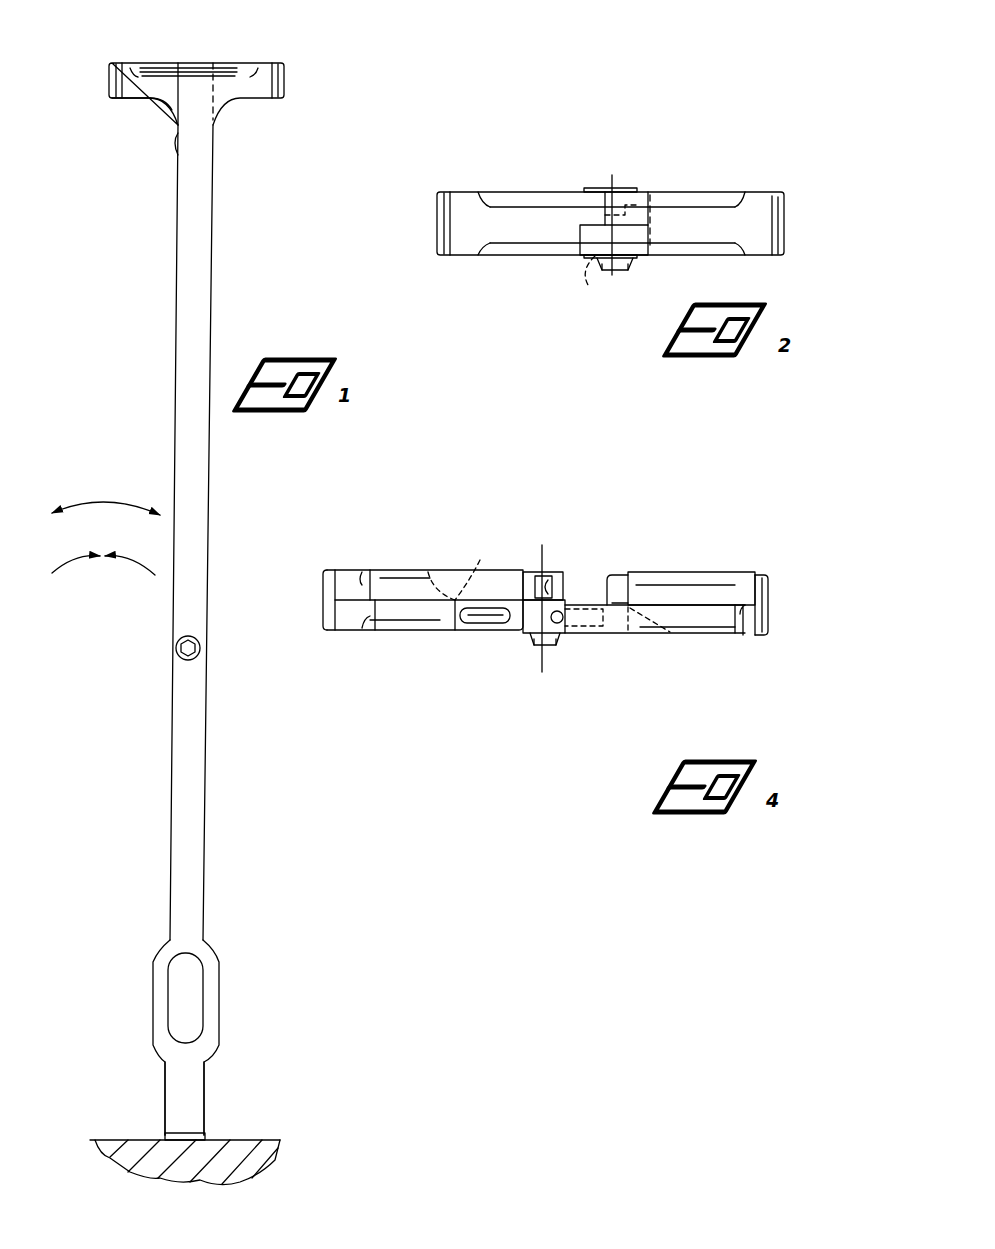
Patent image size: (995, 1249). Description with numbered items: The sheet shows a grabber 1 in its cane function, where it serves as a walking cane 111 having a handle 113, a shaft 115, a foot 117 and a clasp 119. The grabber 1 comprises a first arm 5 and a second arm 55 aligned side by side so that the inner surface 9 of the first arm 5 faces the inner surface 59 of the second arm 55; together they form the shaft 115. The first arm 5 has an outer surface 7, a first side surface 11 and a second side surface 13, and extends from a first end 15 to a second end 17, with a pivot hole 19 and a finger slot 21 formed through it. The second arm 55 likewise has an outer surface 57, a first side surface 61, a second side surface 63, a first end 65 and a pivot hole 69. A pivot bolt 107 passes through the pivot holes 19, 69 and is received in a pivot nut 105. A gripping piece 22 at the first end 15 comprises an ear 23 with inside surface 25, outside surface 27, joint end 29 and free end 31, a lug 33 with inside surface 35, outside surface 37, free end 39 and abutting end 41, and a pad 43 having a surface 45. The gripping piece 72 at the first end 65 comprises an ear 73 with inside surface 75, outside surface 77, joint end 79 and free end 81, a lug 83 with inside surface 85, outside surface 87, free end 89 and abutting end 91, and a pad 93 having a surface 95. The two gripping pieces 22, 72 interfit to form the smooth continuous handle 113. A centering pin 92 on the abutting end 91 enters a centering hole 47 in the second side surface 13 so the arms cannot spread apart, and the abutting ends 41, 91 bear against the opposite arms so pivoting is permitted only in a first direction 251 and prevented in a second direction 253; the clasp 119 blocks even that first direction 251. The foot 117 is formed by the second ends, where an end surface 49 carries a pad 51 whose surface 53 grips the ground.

In FIG. 1, the grabber 1 is at (134, 302).
In FIG. 2, the grabber 1 is at (766, 152).
In FIG. 4, the grabber 1 is at (778, 507).
In FIG. 1, the first arm 5 is at (214, 262).
In FIG. 2, the first arm 5 is at (583, 258).
In FIG. 4, the first arm 5 is at (605, 634).
In FIG. 1, the outer surface 7 is at (200, 205).
In FIG. 4, the outer surface 7 is at (618, 634).
In FIG. 4, the inner surface 9 is at (604, 590).
In FIG. 4, the first side surface 11 is at (672, 630).
In FIG. 4, the second side surface 13 is at (553, 646).
In FIG. 1, the first end 15 is at (207, 62).
In FIG. 1, the second end 17 is at (178, 1133).
In FIG. 2, the pivot hole 19 is at (652, 205).
In FIG. 4, the pivot hole 19 is at (525, 640).
In FIG. 1, the slot 21 is at (170, 980).
In FIG. 2, the gripping piece 22 is at (700, 192).
In FIG. 4, the gripping piece 22 is at (757, 641).
In FIG. 1, the ear 23 is at (270, 68).
In FIG. 2, the ear 23 is at (740, 255).
In FIG. 4, the ear 23 is at (712, 634).
In FIG. 4, the inside surface 25 is at (698, 600).
In FIG. 4, the outside surface 27 is at (742, 636).
In FIG. 4, the joint end 29 is at (640, 624).
In FIG. 4, the free end 31 is at (768, 615).
In FIG. 2, the lug 33 is at (720, 200).
In FIG. 4, the lug 33 is at (724, 572).
In FIG. 4, the inside surface 35 is at (765, 636).
In FIG. 4, the outside surface 37 is at (750, 576).
In FIG. 4, the free end 39 is at (770, 592).
In FIG. 4, the abutting end 41 is at (626, 577).
In FIG. 1, the pad 43 is at (276, 100).
In FIG. 2, the pad 43 is at (781, 216).
In FIG. 4, the pad 43 is at (770, 578).
In FIG. 1, the surface 45 is at (285, 76).
In FIG. 2, the surface 45 is at (786, 236).
In FIG. 4, the surface 45 is at (770, 634).
In FIG. 4, the centering hole 47 is at (562, 620).
In FIG. 1, the end surface 49 is at (200, 1133).
In FIG. 1, the pad 51 is at (206, 1138).
In FIG. 1, the surface 53 is at (190, 1142).
In FIG. 2, the second arm 55 is at (573, 190).
In FIG. 4, the second arm 55 is at (498, 570).
In FIG. 4, the outer surface 57 is at (526, 572).
In FIG. 4, the inner surface 59 is at (523, 622).
In FIG. 4, the first side surface 61 is at (441, 552).
In FIG. 4, the second side surface 63 is at (540, 578).
In FIG. 1, the first end 65 is at (160, 63).
In FIG. 2, the pivot hole 69 is at (602, 280).
In FIG. 4, the pivot hole 69 is at (546, 575).
In FIG. 1, the gripping piece 72 is at (155, 104).
In FIG. 2, the gripping piece 72 is at (532, 258).
In FIG. 4, the gripping piece 72 is at (340, 632).
In FIG. 2, the ear 73 is at (522, 190).
In FIG. 4, the ear 73 is at (386, 590).
In FIG. 4, the inside surface 75 is at (372, 628).
In FIG. 4, the outside surface 77 is at (412, 570).
In FIG. 4, the joint end 79 is at (470, 563).
In FIG. 4, the free end 81 is at (325, 586).
In FIG. 1, the lug 83 is at (135, 100).
In FIG. 2, the lug 83 is at (490, 256).
In FIG. 4, the lug 83 is at (395, 632).
In FIG. 4, the inside surface 85 is at (368, 585).
In FIG. 4, the outside surface 87 is at (410, 632).
In FIG. 4, the free end 89 is at (325, 611).
In FIG. 4, the abutting end 91 is at (472, 625).
In FIG. 4, the centering pin 92 is at (486, 620).
In FIG. 1, the pad 93 is at (112, 100).
In FIG. 2, the pad 93 is at (447, 190).
In FIG. 4, the pad 93 is at (326, 572).
In FIG. 1, the surface 95 is at (110, 75).
In FIG. 1, the pivot nut 105 is at (175, 648).
In FIG. 2, the pivot nut 105 is at (630, 263).
In FIG. 2, the pivot bolt 107 is at (606, 190).
In FIG. 1, the walking cane 111 is at (152, 349).
In FIG. 1, the handle 113 is at (136, 54).
In FIG. 1, the shaft 115 is at (168, 777).
In FIG. 1, the foot 117 is at (162, 1135).
In FIG. 1, the clasp 119 is at (176, 156).
In FIG. 2, the clasp 119 is at (672, 190).
In FIG. 4, the clasp 119 is at (551, 575).
In FIG. 1, the first direction 251 is at (105, 500).
In FIG. 1, the second direction 253 is at (63, 566).